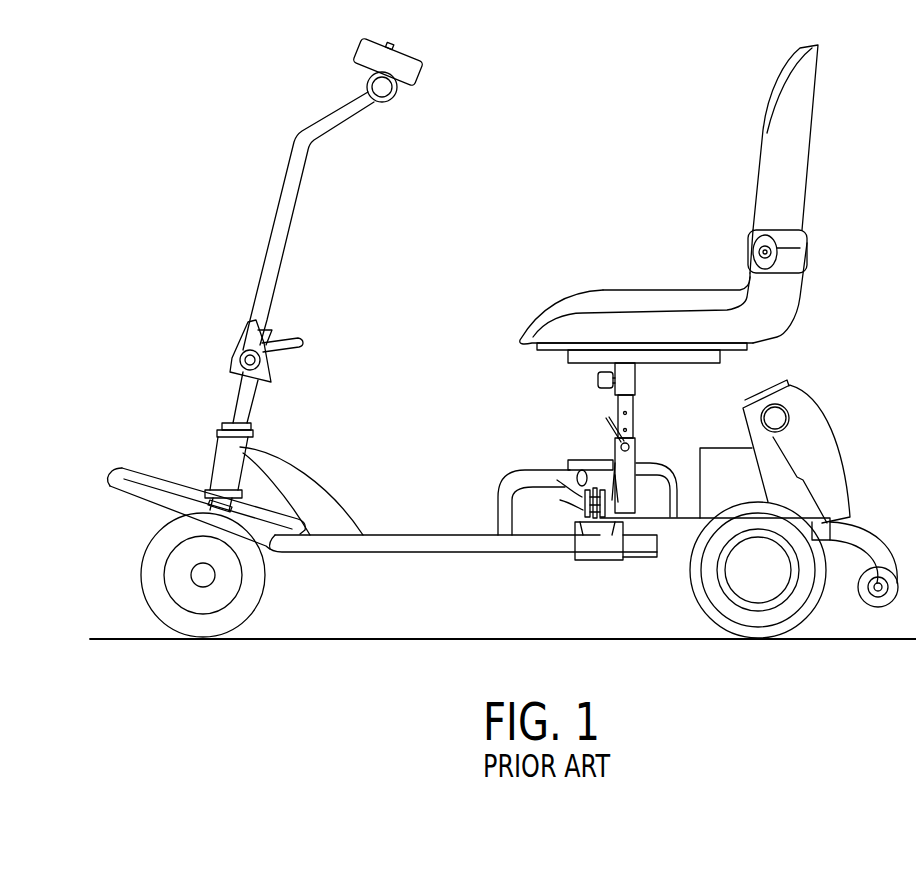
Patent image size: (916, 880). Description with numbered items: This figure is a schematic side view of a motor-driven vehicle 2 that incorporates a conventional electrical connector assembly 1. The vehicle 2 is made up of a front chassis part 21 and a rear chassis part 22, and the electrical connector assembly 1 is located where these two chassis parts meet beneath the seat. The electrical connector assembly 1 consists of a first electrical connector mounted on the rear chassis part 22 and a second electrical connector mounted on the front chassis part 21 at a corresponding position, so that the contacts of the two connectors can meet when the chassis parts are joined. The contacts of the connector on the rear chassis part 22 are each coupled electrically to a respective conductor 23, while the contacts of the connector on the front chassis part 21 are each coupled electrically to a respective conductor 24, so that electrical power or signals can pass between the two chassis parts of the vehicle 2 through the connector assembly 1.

The electrical connector assembly 1 is at (603, 523).
The motor-driven vehicle 2 is at (572, 222).
The front chassis part 21 is at (427, 545).
The rear chassis part 22 is at (670, 527).
The conductor 23 is at (620, 502).
The conductor 24 is at (567, 500).